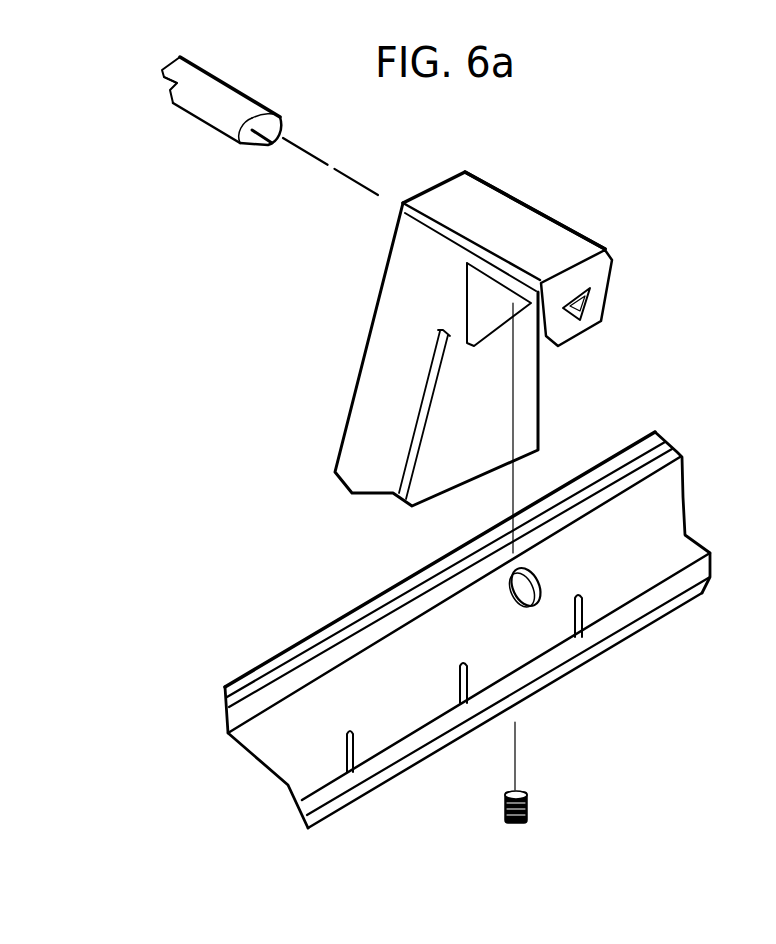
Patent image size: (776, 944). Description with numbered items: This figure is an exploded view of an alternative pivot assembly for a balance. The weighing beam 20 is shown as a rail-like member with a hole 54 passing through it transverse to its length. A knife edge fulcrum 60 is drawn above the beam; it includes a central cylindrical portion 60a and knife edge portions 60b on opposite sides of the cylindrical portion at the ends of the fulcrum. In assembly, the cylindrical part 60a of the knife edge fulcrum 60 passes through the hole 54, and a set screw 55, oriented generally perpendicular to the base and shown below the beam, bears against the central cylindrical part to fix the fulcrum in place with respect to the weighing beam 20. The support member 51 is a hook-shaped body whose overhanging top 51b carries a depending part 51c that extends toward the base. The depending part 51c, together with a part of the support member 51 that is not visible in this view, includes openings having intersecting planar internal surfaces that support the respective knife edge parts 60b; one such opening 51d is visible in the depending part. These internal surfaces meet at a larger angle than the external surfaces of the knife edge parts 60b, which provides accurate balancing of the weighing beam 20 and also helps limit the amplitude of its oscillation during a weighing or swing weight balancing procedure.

The weighing beam 20 is at (493, 630).
The support member 51 is at (494, 334).
The overhanging top 51b is at (532, 203).
The depending part 51c is at (603, 256).
The triangular opening 51d is at (580, 302).
The hole 54 is at (512, 562).
The set screw 55 is at (527, 802).
The knife edge fulcrum 60 is at (235, 121).
The central cylindrical portion 60a is at (207, 110).
The knife edge portions 60b is at (178, 62).